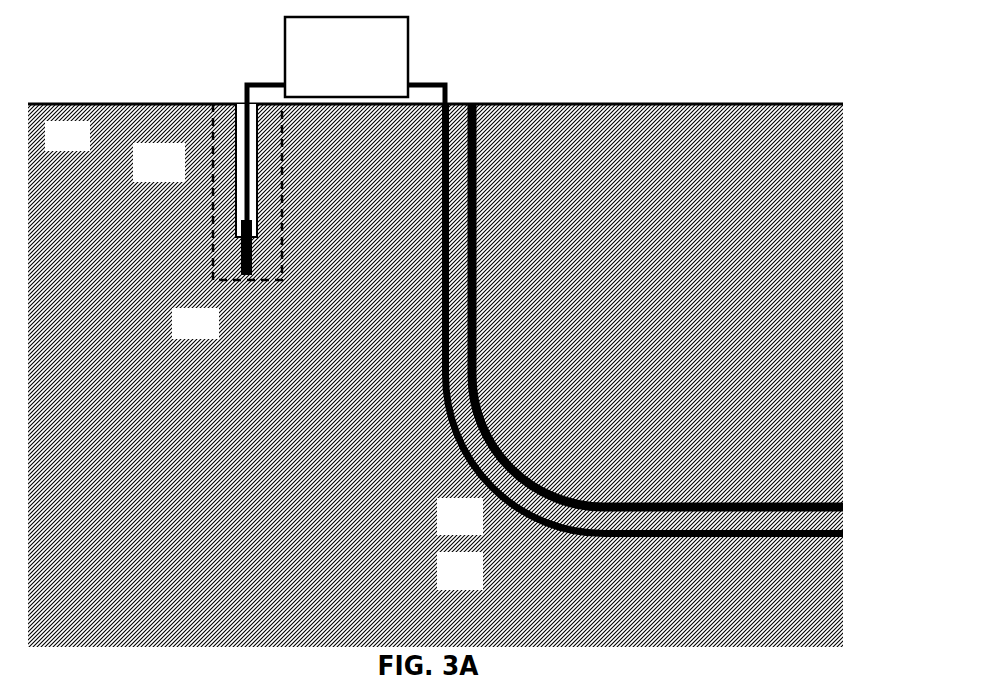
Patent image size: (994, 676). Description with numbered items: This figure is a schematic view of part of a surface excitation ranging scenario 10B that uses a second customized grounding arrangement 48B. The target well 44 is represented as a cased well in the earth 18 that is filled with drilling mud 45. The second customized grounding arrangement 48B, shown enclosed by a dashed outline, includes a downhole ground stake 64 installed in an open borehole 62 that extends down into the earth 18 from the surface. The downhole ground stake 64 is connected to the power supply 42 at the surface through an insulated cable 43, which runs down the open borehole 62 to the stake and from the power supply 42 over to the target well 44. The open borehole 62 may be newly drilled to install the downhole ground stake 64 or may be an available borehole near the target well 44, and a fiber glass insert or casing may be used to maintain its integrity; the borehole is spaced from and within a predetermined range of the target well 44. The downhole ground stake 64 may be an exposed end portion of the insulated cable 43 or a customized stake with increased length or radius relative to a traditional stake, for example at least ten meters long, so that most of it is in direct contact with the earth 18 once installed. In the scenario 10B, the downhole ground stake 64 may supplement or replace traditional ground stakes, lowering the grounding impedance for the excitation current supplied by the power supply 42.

The surface excitation ranging scenario 10B is at (618, 61).
The earth 18 is at (80, 147).
The power supply 42 is at (285, 42).
The insulated cable 43 is at (232, 83).
The target well 44 is at (550, 524).
The drilling mud 45 is at (529, 495).
The second customized grounding arrangement 48B is at (202, 129).
The open borehole 62 is at (221, 170).
The downhole ground stake 64 is at (240, 265).